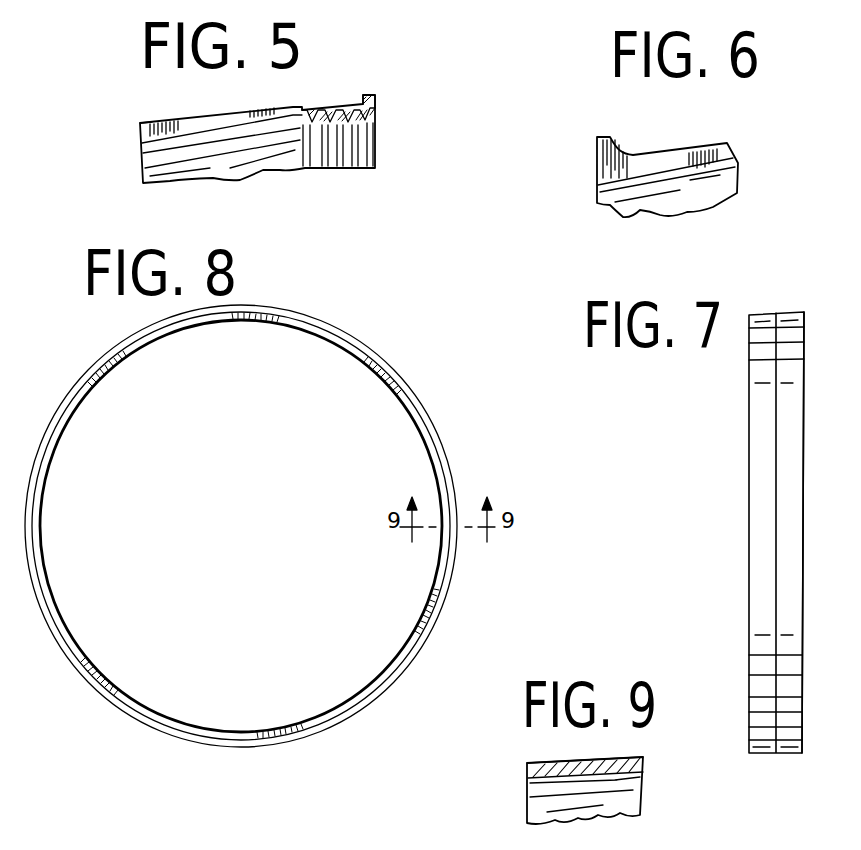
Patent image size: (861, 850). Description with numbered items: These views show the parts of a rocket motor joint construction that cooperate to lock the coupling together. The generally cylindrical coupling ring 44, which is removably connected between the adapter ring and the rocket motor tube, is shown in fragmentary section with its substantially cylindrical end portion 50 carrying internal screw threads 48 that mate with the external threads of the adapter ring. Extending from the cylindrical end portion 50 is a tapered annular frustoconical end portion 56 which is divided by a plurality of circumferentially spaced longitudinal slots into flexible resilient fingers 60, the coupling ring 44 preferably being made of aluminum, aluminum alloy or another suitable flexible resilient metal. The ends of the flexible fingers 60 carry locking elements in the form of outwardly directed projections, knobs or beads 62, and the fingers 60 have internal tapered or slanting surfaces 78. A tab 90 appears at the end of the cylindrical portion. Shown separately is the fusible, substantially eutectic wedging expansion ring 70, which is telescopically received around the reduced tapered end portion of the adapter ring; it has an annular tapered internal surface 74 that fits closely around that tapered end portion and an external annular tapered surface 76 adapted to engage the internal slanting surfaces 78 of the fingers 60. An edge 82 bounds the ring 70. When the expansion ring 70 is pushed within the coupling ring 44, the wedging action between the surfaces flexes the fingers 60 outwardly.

In FIG. 5, the coupling ring 44 is at (388, 109).
In FIG. 5, the internal screw threads 48 is at (357, 133).
In FIG. 5, the cylindrical end portion 50 is at (340, 107).
In FIG. 5, the frustoconical end portion 56 is at (247, 115).
In FIG. 6, the frustoconical end portion 56 is at (698, 152).
In FIG. 5, the flexible resilient fingers 60 is at (140, 147).
In FIG. 6, the flexible resilient fingers 60 is at (597, 175).
In FIG. 5, the beads 62 is at (152, 121).
In FIG. 6, the beads 62 is at (610, 140).
In FIG. 5, the internal tapered surfaces 78 is at (208, 133).
In FIG. 6, the internal tapered surfaces 78 is at (682, 170).
In FIG. 5, the tab 90 is at (368, 103).
In FIG. 8, the wedging expansion ring 70 is at (358, 320).
In FIG. 7, the wedging expansion ring 70 is at (724, 392).
In FIG. 9, the wedging expansion ring 70 is at (514, 755).
In FIG. 9, the annular tapered internal surface 74 is at (617, 778).
In FIG. 7, the external annular tapered surface 76 is at (767, 755).
In FIG. 9, the external annular tapered surface 76 is at (553, 759).
In FIG. 7, the edge 82 is at (802, 735).
In FIG. 9, the edge 82 is at (643, 767).